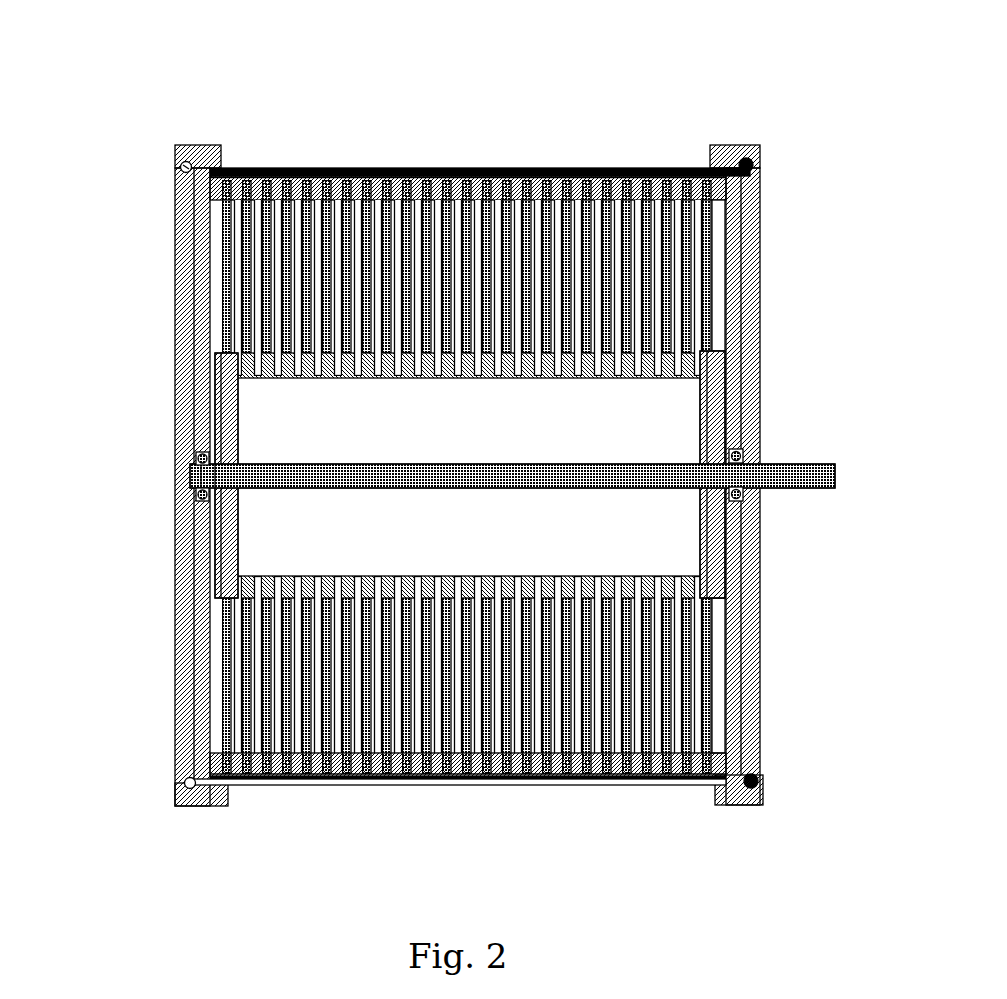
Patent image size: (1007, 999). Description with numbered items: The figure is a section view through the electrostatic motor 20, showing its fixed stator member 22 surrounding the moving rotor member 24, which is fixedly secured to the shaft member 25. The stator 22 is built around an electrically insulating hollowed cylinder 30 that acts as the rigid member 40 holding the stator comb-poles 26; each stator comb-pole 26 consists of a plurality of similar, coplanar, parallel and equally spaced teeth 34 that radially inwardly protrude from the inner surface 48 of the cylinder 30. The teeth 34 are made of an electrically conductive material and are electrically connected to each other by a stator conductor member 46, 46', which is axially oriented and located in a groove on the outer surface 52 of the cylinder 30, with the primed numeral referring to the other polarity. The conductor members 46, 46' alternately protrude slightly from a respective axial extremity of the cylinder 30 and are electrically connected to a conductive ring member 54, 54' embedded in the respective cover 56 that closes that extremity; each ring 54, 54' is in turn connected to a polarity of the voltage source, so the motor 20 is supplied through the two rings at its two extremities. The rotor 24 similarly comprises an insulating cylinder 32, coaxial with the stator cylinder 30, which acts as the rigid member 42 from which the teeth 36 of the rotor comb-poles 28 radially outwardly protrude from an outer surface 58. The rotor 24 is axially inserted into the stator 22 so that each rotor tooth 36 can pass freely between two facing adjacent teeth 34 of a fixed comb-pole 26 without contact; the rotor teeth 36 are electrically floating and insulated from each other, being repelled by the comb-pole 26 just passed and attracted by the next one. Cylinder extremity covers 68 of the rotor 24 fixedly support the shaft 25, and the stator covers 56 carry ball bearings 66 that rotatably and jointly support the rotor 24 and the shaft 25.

The electrostatic motor 20 is at (543, 78).
The stator member 22 is at (590, 160).
The rotor member 24 is at (297, 570).
The shaft member 25 is at (775, 470).
The stator comb-pole 26 is at (400, 160).
The rotor comb-pole 28 is at (385, 362).
The hollowed cylinder 30 is at (630, 780).
The insulating cylinder 32 is at (703, 368).
The stator teeth 34 is at (440, 762).
The rotor teeth 36 is at (460, 578).
The rigid member 40 is at (290, 770).
The rigid member 42 is at (375, 572).
The stator conductor member 46 is at (468, 133).
The stator conductor member 46' is at (468, 811).
The inner surface 48 is at (723, 725).
The outer surface 52 is at (718, 797).
The conductive ring member 54 is at (791, 447).
The conductive ring member 54' is at (121, 463).
The cover 56 is at (170, 298).
The outer surface 58 is at (700, 585).
The ball bearings 66 is at (188, 446).
The cylinder extremity covers 68 is at (207, 408).